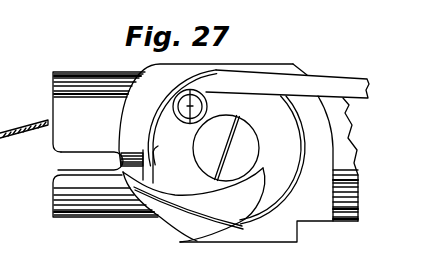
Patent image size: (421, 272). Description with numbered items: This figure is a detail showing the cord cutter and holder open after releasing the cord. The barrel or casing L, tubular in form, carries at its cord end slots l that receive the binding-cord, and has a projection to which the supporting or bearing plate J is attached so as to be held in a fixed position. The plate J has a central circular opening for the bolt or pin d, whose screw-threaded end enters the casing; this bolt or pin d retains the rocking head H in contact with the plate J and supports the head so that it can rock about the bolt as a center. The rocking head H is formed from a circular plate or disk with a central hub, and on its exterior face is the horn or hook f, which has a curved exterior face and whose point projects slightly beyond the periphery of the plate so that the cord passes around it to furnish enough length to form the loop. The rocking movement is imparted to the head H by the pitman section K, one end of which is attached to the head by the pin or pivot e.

The barrel or casing L is at (110, 107).
The slots l is at (87, 160).
The supporting or bearing plate J is at (238, 153).
The rocking head H is at (226, 147).
The pitman section K is at (287, 84).
The pin or pivot e is at (190, 100).
The bolt or pin d is at (226, 148).
The horn or hook f is at (194, 205).